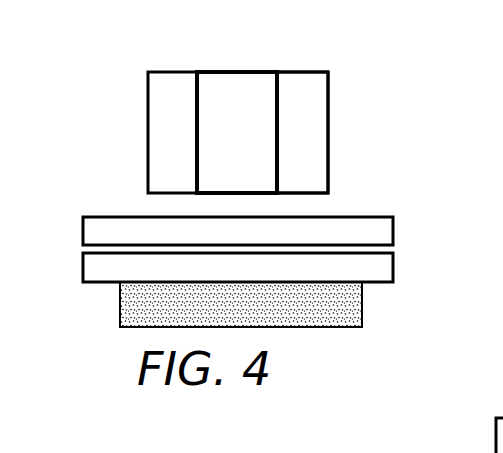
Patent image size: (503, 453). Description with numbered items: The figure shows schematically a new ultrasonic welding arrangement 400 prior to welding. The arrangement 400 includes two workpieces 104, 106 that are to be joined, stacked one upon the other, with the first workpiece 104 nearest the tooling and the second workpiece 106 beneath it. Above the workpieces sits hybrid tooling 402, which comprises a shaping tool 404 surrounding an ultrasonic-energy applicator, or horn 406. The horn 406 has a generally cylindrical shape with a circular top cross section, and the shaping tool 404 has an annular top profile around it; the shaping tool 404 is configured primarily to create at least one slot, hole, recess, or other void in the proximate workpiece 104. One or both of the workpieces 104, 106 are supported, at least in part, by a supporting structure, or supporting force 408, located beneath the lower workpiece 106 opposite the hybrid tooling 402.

The ultrasonic welding arrangement 400 is at (112, 17).
The hybrid tooling 402 is at (365, 80).
The shaping tool 404 is at (288, 72).
The horn 406 is at (265, 136).
The supporting structure 408 is at (363, 317).
The workpiece 104 is at (395, 217).
The workpiece 106 is at (393, 272).